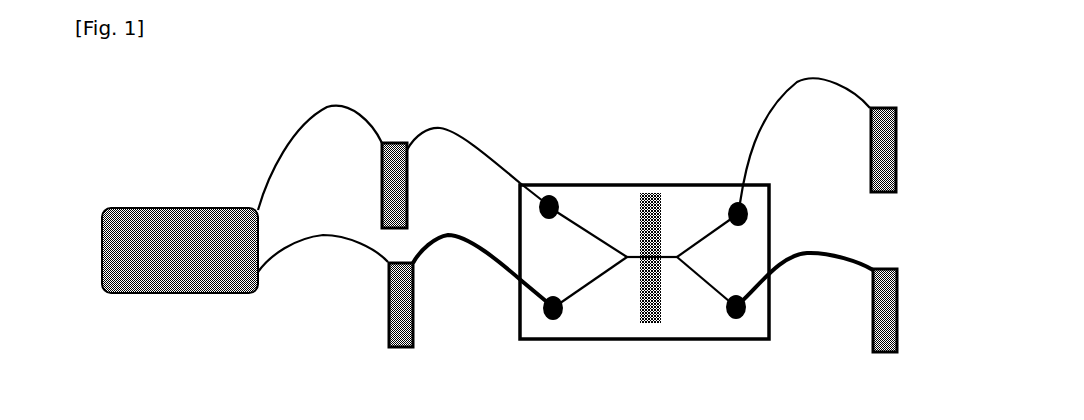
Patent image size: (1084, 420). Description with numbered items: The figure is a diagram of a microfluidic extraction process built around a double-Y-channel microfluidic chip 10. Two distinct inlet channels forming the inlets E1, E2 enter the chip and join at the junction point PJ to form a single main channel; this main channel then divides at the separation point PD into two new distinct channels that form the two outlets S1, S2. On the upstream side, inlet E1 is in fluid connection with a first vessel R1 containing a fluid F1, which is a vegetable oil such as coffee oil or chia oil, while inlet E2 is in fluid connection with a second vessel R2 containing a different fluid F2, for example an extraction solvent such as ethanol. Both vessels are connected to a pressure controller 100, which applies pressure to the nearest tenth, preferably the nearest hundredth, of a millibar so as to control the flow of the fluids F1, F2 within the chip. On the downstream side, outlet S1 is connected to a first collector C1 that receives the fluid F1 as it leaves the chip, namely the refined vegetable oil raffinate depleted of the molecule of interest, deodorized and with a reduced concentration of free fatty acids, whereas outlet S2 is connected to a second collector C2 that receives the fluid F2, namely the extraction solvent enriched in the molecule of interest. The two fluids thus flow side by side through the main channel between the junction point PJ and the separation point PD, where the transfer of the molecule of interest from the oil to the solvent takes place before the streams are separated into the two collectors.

The pressure controller 100 is at (180, 250).
The microfluidic chip 10 is at (683, 181).
The first vessel R1 is at (380, 185).
The second vessel R2 is at (388, 304).
The fluid F1 is at (477, 164).
The fluid F2 is at (483, 271).
The inlet E1 is at (583, 226).
The inlet E2 is at (585, 288).
The outlet S1 is at (712, 229).
The outlet S2 is at (711, 288).
The junction point PJ is at (623, 261).
The separation point PD is at (685, 262).
The first collector C1 is at (897, 143).
The second collector C2 is at (899, 304).